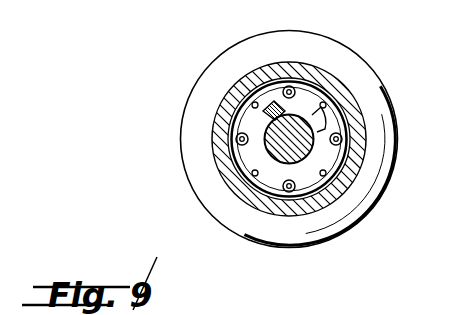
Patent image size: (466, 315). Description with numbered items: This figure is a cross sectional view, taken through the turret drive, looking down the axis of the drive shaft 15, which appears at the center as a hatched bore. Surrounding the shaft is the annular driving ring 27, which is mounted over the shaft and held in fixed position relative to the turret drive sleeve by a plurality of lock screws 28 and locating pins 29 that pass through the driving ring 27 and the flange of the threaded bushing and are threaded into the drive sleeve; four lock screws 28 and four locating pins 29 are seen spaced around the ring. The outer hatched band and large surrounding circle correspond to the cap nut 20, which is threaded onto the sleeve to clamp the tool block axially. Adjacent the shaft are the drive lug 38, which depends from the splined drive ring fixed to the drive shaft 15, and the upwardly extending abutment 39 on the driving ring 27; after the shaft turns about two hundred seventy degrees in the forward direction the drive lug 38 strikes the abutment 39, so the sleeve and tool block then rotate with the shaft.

The cap nut 20 is at (357, 76).
The driving ring 27 is at (245, 127).
The lock screws 28 is at (238, 141).
The locating pins 29 is at (252, 104).
The drive shaft 15 is at (277, 154).
The drive lug 38 is at (272, 102).
The abutment 39 is at (319, 113).